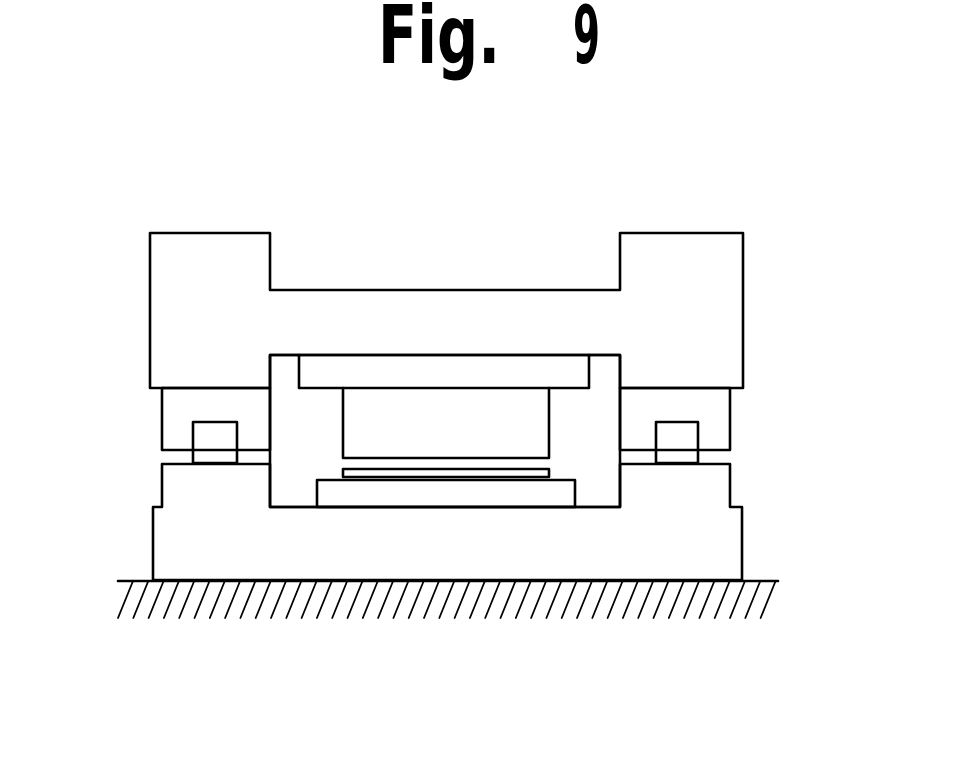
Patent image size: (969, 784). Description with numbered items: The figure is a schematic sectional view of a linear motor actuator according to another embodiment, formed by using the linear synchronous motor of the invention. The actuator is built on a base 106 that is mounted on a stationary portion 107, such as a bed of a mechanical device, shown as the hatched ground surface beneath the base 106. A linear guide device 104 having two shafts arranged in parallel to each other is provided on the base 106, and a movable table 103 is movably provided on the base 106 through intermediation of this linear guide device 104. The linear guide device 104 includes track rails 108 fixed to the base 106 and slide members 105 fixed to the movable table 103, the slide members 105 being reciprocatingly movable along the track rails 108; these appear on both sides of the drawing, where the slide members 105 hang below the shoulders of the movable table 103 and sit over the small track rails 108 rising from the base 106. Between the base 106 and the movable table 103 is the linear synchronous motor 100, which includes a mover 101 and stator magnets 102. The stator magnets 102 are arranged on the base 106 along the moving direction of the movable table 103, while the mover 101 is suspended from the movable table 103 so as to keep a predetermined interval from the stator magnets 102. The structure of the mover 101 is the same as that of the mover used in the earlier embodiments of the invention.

The linear synchronous motor 100 is at (558, 462).
The mover 101 is at (435, 413).
The stator magnets 102 is at (433, 490).
The movable table 103 is at (210, 231).
The linear guide device 104 is at (155, 459).
The slide members 105 is at (160, 410).
The base 106 is at (745, 543).
The stationary portion 107 is at (602, 578).
The track rails 108 is at (213, 448).